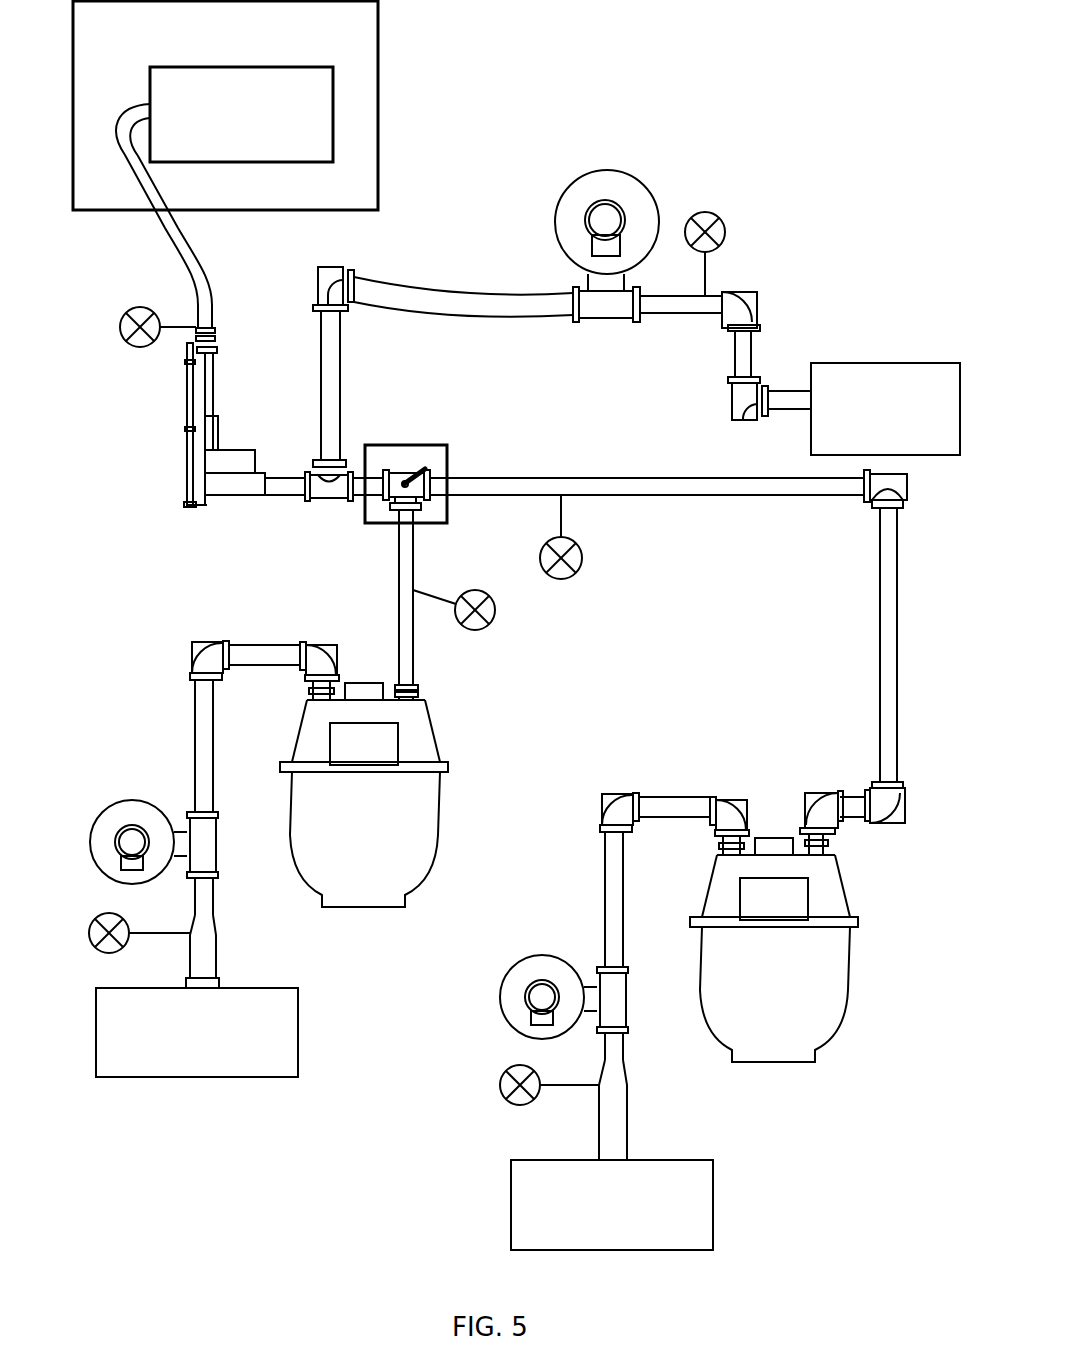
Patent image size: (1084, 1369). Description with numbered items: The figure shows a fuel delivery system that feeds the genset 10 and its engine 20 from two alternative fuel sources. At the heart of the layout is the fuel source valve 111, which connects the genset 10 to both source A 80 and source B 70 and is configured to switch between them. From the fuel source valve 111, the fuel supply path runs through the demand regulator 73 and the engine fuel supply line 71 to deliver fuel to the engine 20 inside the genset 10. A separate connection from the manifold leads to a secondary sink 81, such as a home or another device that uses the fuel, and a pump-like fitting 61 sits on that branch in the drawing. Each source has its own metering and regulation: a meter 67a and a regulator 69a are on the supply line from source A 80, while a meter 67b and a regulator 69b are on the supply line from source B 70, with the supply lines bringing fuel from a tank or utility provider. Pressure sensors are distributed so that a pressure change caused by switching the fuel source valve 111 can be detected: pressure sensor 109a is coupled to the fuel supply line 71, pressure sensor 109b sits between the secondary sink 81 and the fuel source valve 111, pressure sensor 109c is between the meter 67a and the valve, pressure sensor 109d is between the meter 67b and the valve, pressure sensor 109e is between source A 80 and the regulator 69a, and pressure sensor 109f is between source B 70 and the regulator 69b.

The genset 10 is at (290, 48).
The engine 20 is at (257, 147).
The return pump 61 is at (626, 170).
The meter 67a is at (792, 1000).
The meter 67b is at (388, 845).
The regulator 69a is at (535, 954).
The regulator 69b is at (118, 800).
The source B 70 is at (298, 1050).
The engine fuel supply line 71 is at (210, 292).
The demand regulator 73 is at (215, 388).
The source A 80 is at (713, 1222).
The secondary sink 81 is at (849, 362).
The pressure sensor 109a is at (118, 340).
The pressure sensor 109b is at (712, 212).
The pressure sensor 109c is at (583, 556).
The pressure sensor 109d is at (490, 622).
The pressure sensor 109e is at (494, 1090).
The pressure sensor 109f is at (133, 926).
The fuel source valve 111 is at (420, 445).